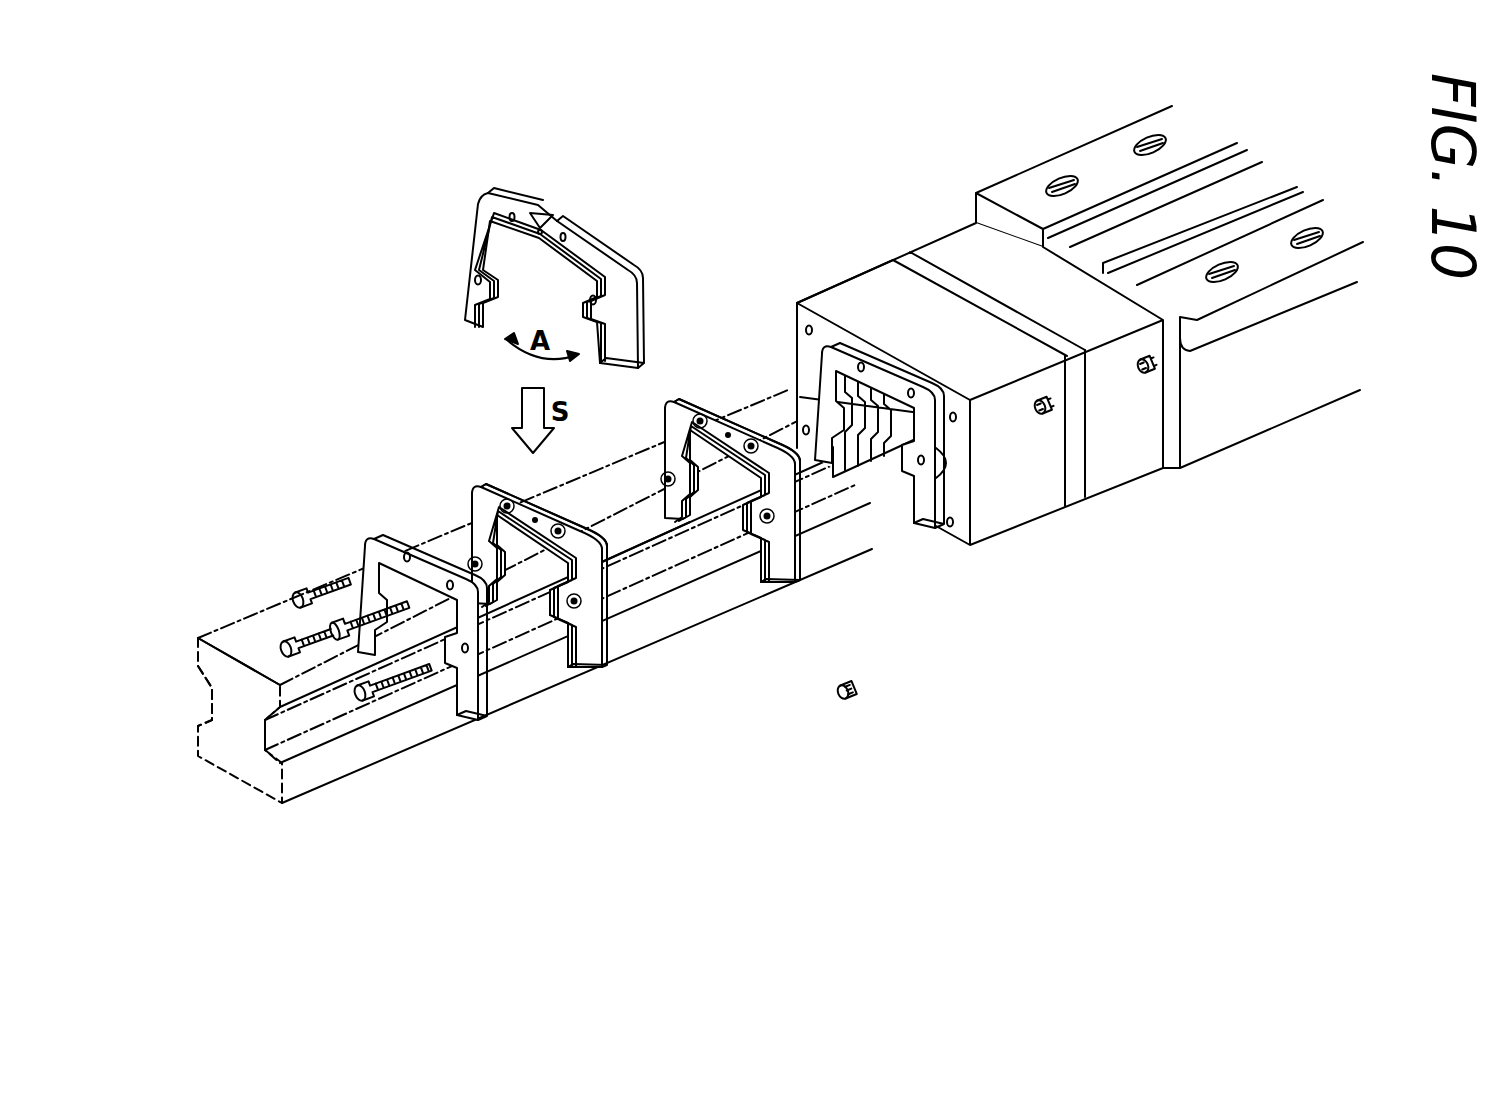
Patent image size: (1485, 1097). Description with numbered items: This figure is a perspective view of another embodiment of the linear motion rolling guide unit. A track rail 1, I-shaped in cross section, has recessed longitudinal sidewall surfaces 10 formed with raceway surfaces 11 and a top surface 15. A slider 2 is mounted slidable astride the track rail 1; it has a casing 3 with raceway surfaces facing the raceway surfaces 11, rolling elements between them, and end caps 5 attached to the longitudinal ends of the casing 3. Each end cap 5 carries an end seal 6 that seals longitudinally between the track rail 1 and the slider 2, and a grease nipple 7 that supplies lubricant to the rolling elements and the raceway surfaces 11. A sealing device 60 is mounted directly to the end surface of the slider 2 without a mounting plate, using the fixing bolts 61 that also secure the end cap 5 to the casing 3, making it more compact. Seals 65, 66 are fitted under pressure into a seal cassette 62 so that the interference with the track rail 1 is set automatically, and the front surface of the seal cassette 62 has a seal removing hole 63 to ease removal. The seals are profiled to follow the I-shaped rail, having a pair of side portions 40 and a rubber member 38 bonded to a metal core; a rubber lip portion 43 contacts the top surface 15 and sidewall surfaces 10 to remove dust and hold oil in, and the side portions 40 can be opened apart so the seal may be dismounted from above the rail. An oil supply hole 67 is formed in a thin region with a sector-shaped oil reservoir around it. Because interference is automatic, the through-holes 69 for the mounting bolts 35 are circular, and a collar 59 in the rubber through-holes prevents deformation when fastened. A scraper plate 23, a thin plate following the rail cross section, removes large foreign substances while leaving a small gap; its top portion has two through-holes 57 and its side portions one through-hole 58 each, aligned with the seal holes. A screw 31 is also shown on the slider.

The track rail 1 is at (492, 624).
The slider 2 is at (935, 335).
The casing 3 is at (1095, 157).
The end cap 5 is at (960, 243).
The end seal 6 is at (1072, 495).
The grease nipple 7 is at (1155, 372).
The longitudinal sidewall surfaces 10 is at (690, 592).
The raceway surfaces 11 is at (203, 718).
The top surface 15 is at (243, 630).
The scraper plate 23 is at (932, 530).
The fixing screw 31 is at (1045, 416).
The mounting bolts 35 is at (360, 705).
The rubber member 38 is at (573, 662).
The side portions 40 is at (468, 263).
The lip portion 43 is at (557, 633).
The through-holes 57 is at (450, 580).
The through-hole 58 is at (490, 660).
The collar 59 is at (862, 690).
The sealing device 60 is at (863, 367).
The fixing bolts 61 is at (800, 320).
The seal cassette 62 is at (855, 290).
The seal removing hole 63 is at (883, 411).
The seal 65 is at (477, 488).
The seal 66 is at (675, 410).
The oil supply hole 67 is at (538, 515).
The through-holes 69 is at (507, 500).